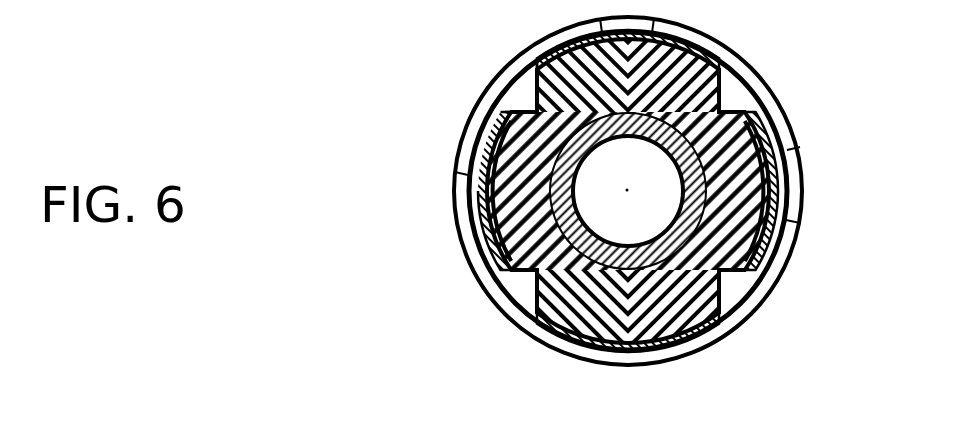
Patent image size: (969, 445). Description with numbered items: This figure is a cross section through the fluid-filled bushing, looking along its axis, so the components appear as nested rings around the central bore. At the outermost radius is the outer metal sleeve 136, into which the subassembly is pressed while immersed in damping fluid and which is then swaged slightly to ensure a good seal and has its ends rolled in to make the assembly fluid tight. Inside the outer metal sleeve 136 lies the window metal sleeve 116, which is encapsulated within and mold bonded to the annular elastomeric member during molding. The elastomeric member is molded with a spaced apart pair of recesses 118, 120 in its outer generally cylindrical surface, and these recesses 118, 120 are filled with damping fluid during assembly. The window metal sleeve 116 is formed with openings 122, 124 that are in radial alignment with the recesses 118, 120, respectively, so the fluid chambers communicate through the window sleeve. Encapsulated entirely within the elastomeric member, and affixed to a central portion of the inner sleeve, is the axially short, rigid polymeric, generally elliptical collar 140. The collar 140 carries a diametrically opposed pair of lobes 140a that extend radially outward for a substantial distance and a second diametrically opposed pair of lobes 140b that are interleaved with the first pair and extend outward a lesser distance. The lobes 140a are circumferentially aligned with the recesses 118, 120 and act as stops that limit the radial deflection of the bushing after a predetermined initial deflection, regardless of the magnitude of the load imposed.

The window metal sleeve 116 is at (667, 370).
The recess 118 is at (741, 93).
The recess 120 is at (523, 293).
The opening 122 is at (733, 300).
The opening 124 is at (521, 100).
The outer metal sleeve 136 is at (790, 123).
The collar 140 is at (478, 240).
The lobes 140a is at (785, 267).
The lobes 140b is at (487, 195).